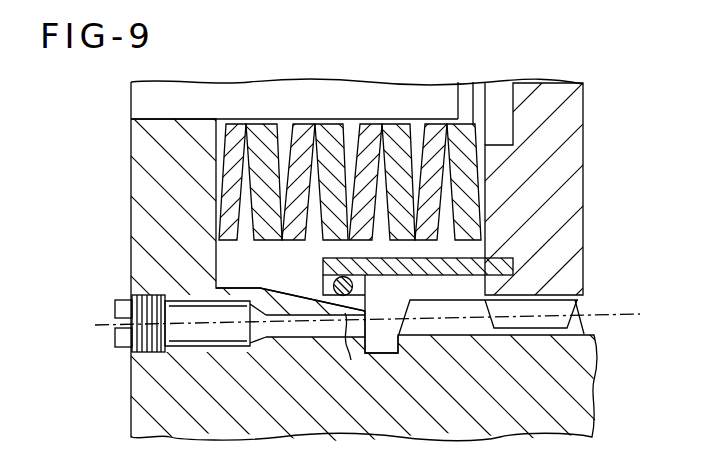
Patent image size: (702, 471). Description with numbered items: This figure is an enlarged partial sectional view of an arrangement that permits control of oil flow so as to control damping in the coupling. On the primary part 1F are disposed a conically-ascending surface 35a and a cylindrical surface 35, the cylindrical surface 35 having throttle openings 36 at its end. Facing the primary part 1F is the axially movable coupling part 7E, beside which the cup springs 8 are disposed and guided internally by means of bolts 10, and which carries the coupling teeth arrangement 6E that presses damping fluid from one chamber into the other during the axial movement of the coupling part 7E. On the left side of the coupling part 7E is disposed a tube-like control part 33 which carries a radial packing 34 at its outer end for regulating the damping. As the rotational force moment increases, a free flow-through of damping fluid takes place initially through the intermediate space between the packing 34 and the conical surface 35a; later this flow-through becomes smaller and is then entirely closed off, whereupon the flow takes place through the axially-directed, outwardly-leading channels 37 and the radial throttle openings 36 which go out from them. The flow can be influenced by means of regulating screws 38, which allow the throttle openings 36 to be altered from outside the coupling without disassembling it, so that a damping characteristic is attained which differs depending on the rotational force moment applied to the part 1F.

The primary part 1F is at (146, 395).
The bolts 10 is at (152, 95).
The coupling part 7E is at (570, 172).
The cup springs 8 is at (232, 156).
The tube-like control part 33 is at (489, 262).
The radial packing 34 is at (365, 296).
The coupling teeth arrangement 6E is at (550, 308).
The throttle openings 36 is at (254, 287).
The cylindrical surface 35 is at (232, 352).
The conically-ascending surface 35a is at (306, 294).
The channels 37 is at (351, 360).
The regulating screws 38 is at (183, 353).